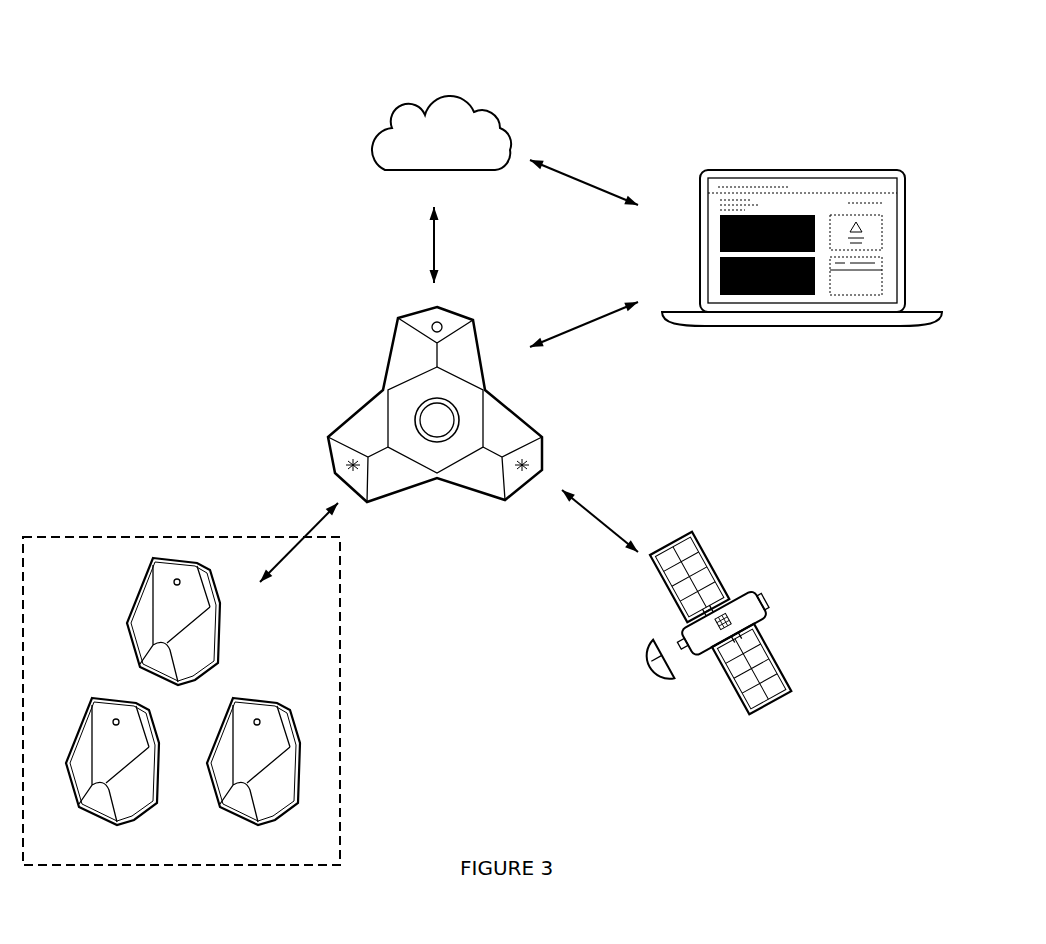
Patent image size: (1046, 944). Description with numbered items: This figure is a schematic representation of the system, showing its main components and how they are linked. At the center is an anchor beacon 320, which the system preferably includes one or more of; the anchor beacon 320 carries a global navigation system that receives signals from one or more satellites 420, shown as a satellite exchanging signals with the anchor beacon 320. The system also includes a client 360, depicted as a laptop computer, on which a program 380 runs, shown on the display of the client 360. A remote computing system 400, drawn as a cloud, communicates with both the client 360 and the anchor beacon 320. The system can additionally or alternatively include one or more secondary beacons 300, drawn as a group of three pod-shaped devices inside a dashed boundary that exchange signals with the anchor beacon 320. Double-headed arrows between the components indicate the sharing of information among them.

The secondary beacon 300 is at (182, 520).
The anchor beacon 320 is at (363, 392).
The client 360 is at (793, 174).
The program 380 is at (797, 215).
The remote computing system 400 is at (387, 125).
The satellite 420 is at (750, 583).